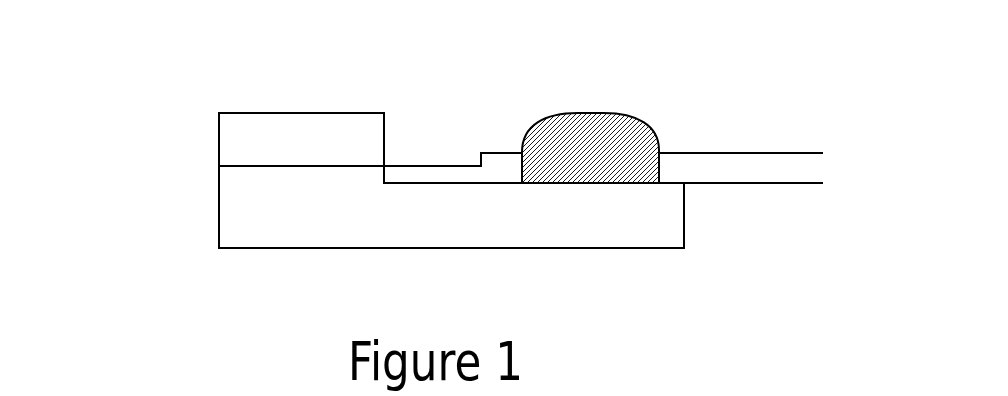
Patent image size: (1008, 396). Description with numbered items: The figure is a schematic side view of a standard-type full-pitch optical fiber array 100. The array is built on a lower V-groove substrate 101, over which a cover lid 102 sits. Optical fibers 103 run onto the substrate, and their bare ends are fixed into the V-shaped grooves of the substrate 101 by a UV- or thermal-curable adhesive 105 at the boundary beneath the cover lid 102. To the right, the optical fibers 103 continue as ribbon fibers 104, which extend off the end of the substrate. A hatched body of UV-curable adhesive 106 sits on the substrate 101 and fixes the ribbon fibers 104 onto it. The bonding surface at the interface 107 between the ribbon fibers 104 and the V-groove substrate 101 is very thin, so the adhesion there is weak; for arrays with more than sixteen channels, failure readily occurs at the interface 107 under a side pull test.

The full-pitch optical fiber array 100 is at (166, 208).
The lower V-groove substrate 101 is at (317, 208).
The cover lid 102 is at (317, 126).
The optical fibers 103 is at (427, 166).
The ribbon fibers 104 is at (713, 153).
The UV- or thermal-curable adhesive 105 is at (248, 166).
The UV-curable adhesive 106 is at (590, 125).
The interface 107 is at (687, 185).